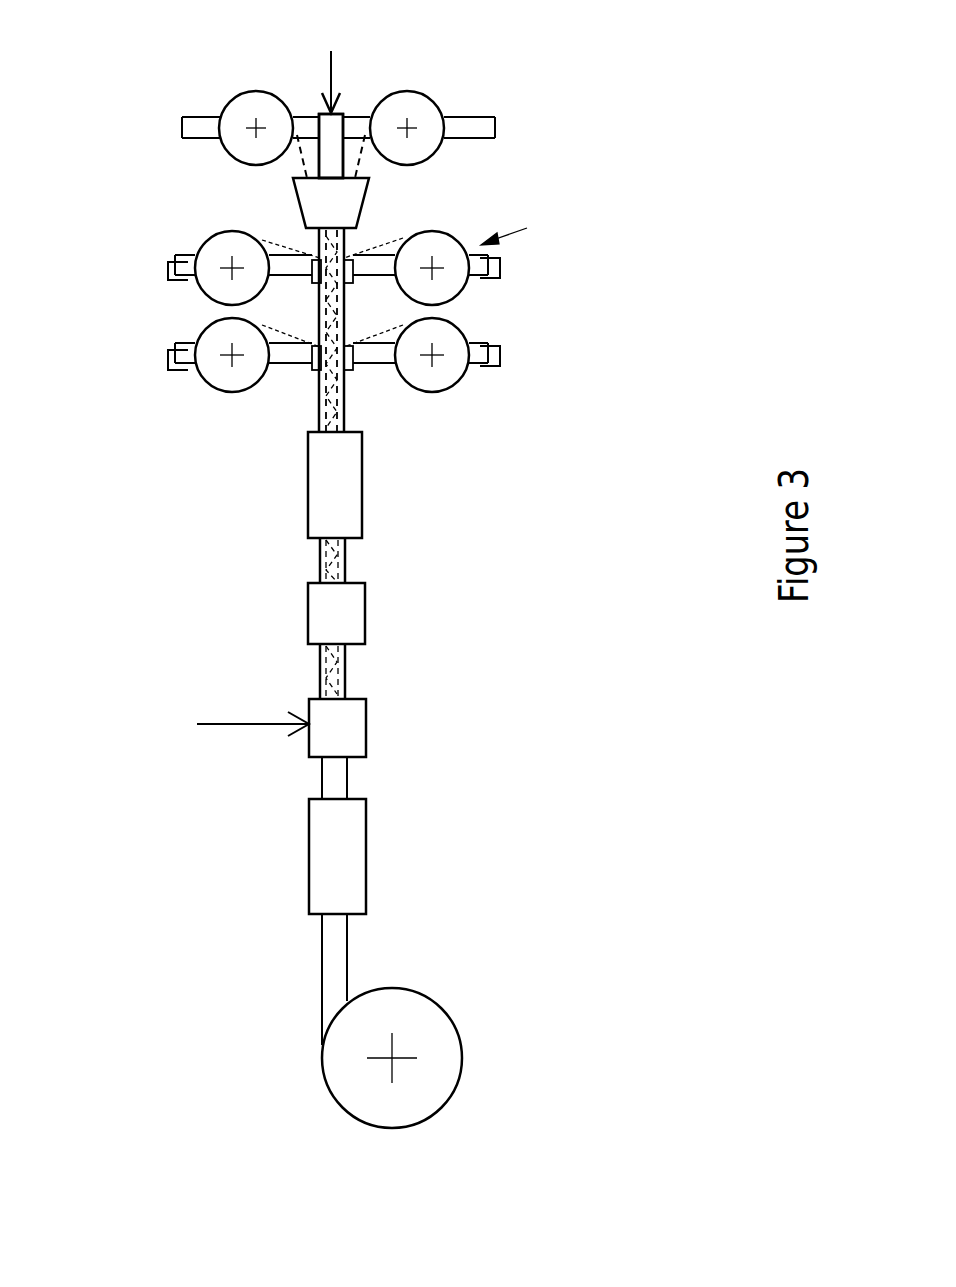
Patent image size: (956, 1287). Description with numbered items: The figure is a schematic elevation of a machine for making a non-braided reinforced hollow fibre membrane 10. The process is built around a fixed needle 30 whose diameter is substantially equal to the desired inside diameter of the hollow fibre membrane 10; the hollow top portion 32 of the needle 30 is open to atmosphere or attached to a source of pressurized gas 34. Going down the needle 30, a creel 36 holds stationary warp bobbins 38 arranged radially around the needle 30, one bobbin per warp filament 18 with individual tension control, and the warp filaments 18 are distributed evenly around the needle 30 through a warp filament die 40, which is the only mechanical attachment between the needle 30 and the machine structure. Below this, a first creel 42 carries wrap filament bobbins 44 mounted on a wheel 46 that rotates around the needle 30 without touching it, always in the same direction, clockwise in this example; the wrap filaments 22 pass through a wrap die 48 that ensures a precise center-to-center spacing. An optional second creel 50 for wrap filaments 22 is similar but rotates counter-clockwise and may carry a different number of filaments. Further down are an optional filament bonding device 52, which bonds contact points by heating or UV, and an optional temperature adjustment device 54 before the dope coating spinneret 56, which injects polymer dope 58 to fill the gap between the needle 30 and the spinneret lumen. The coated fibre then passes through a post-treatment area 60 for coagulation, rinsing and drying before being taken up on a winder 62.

The non-braided reinforced hollow fibre membrane 10 is at (335, 773).
The warp filaments 18 is at (303, 158).
The wrap filaments 22 is at (277, 230).
The fixed needle 30 is at (332, 130).
The top portion of the needle 32 is at (332, 130).
The source of pressurized gas 34 is at (327, 67).
The creel 36 is at (182, 128).
The warp bobbins 38 is at (418, 147).
The warp filament die 40 is at (337, 198).
The first creel 42 is at (186, 266).
The wrap filament bobbins 44 is at (450, 280).
The wheel 46 is at (524, 232).
The wrap die 48 is at (348, 285).
The second creel 50 is at (186, 356).
The filament bonding device 52 is at (342, 495).
The temperature adjustment device 54 is at (342, 617).
The dope coating spinneret 56 is at (342, 725).
The polymer dope 58 is at (230, 724).
The post-treatment area 60 is at (342, 858).
The winder 62 is at (432, 1047).